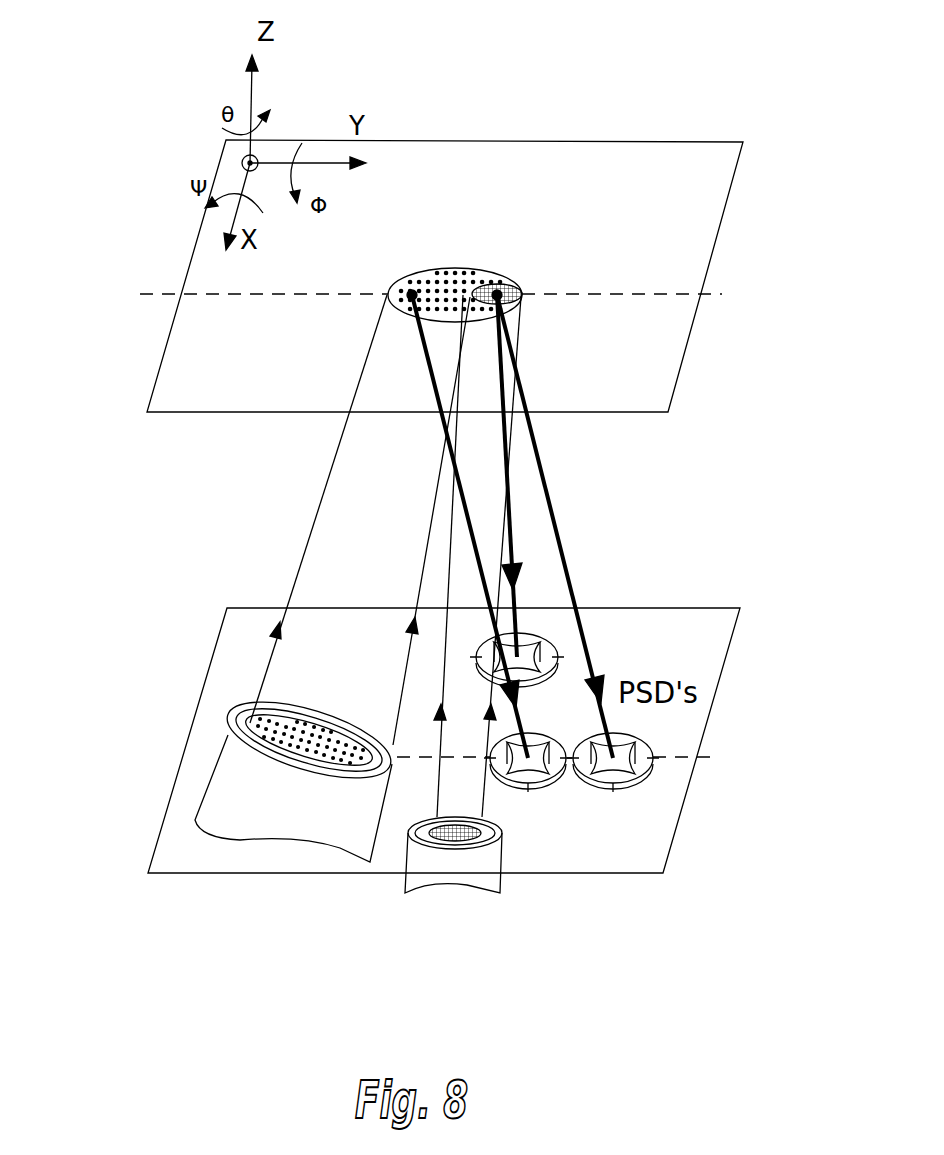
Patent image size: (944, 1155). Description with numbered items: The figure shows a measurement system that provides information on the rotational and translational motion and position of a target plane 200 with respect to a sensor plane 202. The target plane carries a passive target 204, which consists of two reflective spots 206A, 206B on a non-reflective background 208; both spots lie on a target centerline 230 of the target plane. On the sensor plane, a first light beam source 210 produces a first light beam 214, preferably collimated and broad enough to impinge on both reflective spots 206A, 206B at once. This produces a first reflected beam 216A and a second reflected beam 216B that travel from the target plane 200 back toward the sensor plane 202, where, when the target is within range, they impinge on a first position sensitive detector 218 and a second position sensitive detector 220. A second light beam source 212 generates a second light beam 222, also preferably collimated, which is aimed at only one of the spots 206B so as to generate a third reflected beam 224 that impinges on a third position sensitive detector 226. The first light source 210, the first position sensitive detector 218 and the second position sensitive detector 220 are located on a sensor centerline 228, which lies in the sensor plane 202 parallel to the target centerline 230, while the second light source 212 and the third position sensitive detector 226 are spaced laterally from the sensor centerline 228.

The target plane 200 is at (670, 186).
The sensor plane 202 is at (695, 645).
The target 204 is at (495, 275).
The reflective spot 206A is at (403, 282).
The reflective spot 206B is at (520, 284).
The non-reflective background 208 is at (438, 291).
The first light beam source 210 is at (216, 801).
The second light beam source 212 is at (418, 873).
The first light beam 214 is at (312, 526).
The first reflected beam 216A is at (468, 508).
The second reflected beam 216B is at (552, 512).
The first position sensitive detector 218 is at (553, 784).
The second position sensitive detector 220 is at (642, 786).
The second light beam 222 is at (433, 780).
The third reflected beam 224 is at (510, 548).
The third position sensitive detector 226 is at (560, 643).
The sensor centerline 228 is at (671, 753).
The target centerline 230 is at (668, 290).